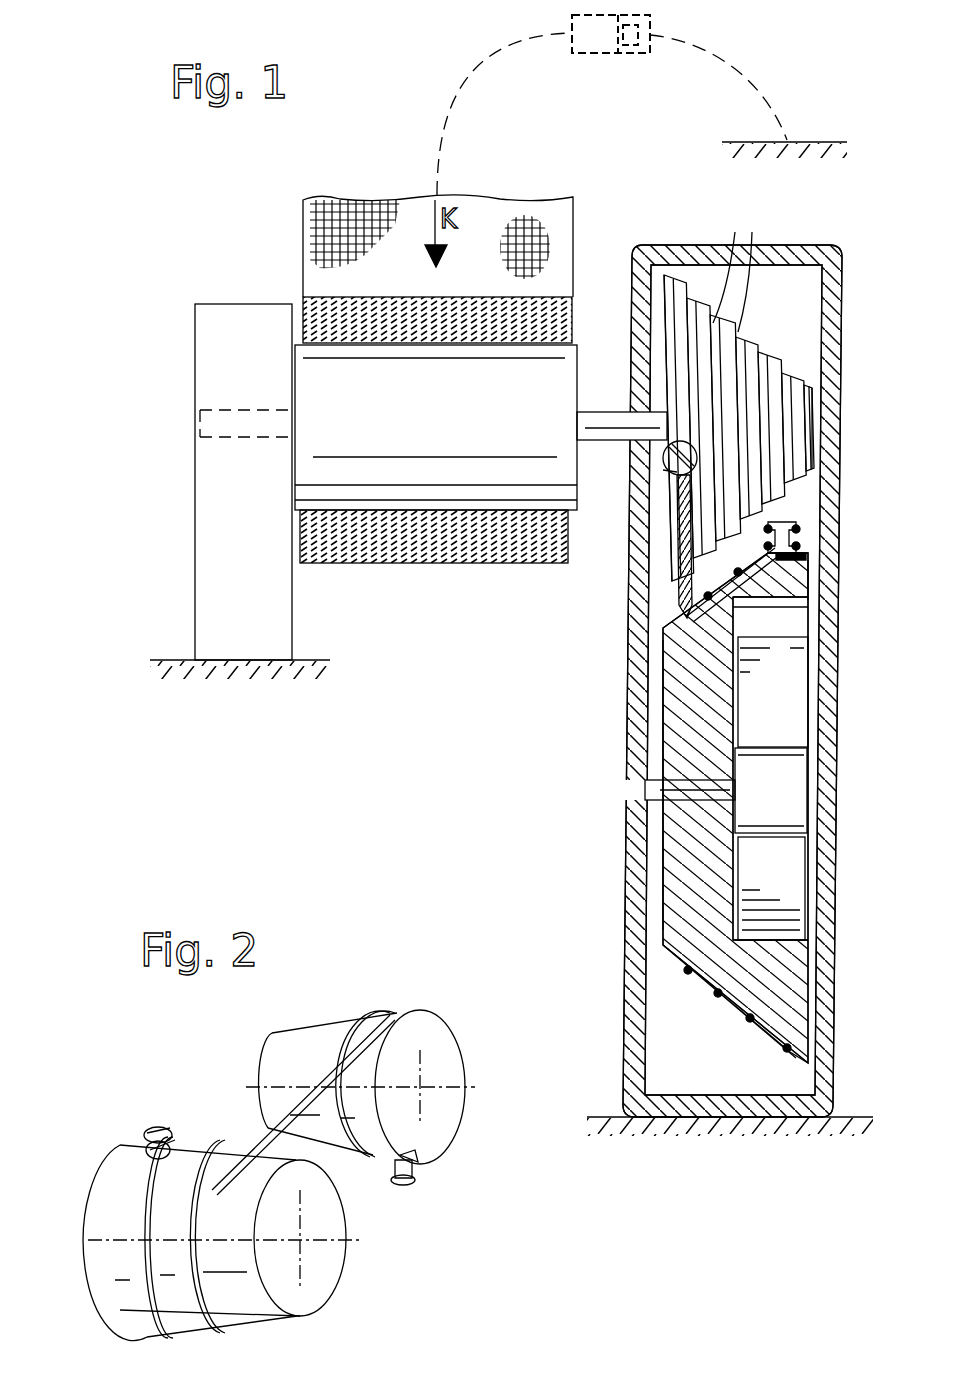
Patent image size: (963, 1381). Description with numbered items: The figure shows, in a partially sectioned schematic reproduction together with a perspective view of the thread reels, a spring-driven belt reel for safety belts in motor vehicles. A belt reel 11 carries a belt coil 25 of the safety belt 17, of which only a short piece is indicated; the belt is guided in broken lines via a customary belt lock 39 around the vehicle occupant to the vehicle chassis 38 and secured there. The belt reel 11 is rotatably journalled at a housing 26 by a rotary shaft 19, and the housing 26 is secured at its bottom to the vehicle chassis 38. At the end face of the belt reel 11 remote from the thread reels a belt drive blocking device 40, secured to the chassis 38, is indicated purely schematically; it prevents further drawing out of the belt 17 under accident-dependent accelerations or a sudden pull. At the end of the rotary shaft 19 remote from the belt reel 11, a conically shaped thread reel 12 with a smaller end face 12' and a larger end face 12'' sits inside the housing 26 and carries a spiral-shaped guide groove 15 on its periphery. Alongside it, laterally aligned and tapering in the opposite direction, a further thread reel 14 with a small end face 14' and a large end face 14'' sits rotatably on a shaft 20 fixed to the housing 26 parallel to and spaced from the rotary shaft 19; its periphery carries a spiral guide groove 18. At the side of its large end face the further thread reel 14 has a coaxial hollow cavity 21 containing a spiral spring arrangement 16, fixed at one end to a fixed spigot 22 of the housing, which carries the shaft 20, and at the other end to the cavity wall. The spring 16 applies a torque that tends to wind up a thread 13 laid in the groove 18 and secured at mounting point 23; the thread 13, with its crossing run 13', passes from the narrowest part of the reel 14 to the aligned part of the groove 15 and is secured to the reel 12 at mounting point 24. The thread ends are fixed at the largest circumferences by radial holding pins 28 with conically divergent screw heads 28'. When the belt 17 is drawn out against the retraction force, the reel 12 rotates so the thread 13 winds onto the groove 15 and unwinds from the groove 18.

In FIG. 1, the belt reel 11 is at (443, 436).
In FIG. 1, the conically shaped thread reel 12 is at (781, 428).
In FIG. 2, the conically shaped thread reel 12 is at (378, 1071).
In FIG. 1, the smaller end face 12' is at (865, 426).
In FIG. 1, the larger end face 12'' is at (631, 416).
In FIG. 1, the thread 13 is at (690, 766).
In FIG. 2, the thread 13 is at (228, 1163).
In FIG. 1, the belt crossing section 13' is at (678, 585).
In FIG. 2, the belt crossing section 13' is at (301, 1105).
In FIG. 1, the further thread reel 14 is at (682, 808).
In FIG. 2, the further thread reel 14 is at (209, 1243).
In FIG. 1, the small end face 14' is at (612, 785).
In FIG. 1, the large end face 14'' is at (863, 588).
In FIG. 1, the spiral-shaped guide groove 15 is at (749, 266).
In FIG. 1, the spiral spring arrangement 16 is at (777, 913).
In FIG. 1, the safety belt 17 is at (357, 213).
In FIG. 1, the spiral guide groove 18 is at (792, 1046).
In FIG. 1, the rotary shaft 19 is at (600, 423).
In FIG. 1, the shaft 20 is at (650, 790).
In FIG. 1, the coaxial hollow cavity 21 is at (802, 935).
In FIG. 1, the fixed spigot 22 is at (795, 778).
In FIG. 1, the mounting point 23 is at (808, 563).
In FIG. 2, the mounting point 23 is at (130, 1150).
In FIG. 1, the mounting point 24 is at (661, 466).
In FIG. 2, the mounting point 24 is at (432, 1172).
In FIG. 1, the belt coil 25 is at (430, 555).
In FIG. 1, the housing 26 is at (685, 248).
In FIG. 1, the radial holding pins 28 is at (831, 530).
In FIG. 2, the radial holding pins 28 is at (297, 1150).
In FIG. 1, the conically divergent screw head 28' is at (744, 497).
In FIG. 1, the vehicle chassis 38 is at (315, 665).
In FIG. 1, the belt lock 39 is at (603, 60).
In FIG. 1, the belt drive blocking device 40 is at (227, 322).